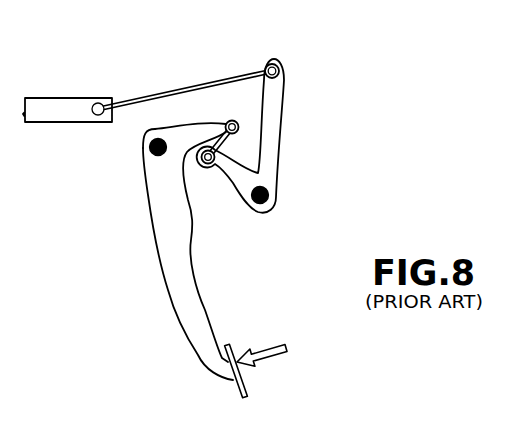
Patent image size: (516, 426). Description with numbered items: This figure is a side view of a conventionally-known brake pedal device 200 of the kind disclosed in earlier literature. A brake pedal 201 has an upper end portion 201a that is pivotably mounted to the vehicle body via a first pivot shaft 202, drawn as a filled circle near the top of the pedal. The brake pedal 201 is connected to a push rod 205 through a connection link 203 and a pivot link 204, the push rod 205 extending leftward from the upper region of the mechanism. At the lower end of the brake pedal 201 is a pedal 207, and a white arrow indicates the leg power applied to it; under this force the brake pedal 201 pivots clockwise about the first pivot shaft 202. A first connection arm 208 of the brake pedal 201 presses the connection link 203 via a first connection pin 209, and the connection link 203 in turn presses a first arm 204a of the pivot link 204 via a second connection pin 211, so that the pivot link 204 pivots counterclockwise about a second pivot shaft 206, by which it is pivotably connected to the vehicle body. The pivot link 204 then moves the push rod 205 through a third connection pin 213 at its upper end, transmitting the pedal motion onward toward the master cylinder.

The brake pedal device 200 is at (356, 78).
The brake pedal 201 is at (167, 257).
The upper end portion 201a is at (144, 162).
The first pivot shaft 202 is at (143, 140).
The connection link 203 is at (218, 149).
The pivot link 204 is at (294, 125).
The first arm 204a is at (233, 186).
The push rod 205 is at (208, 83).
The second pivot shaft 206 is at (268, 206).
The pedal 207 is at (246, 387).
The first connection arm 208 is at (190, 133).
The first connection pin 209 is at (234, 119).
The second connection pin 211 is at (209, 165).
The third connection pin 213 is at (281, 64).